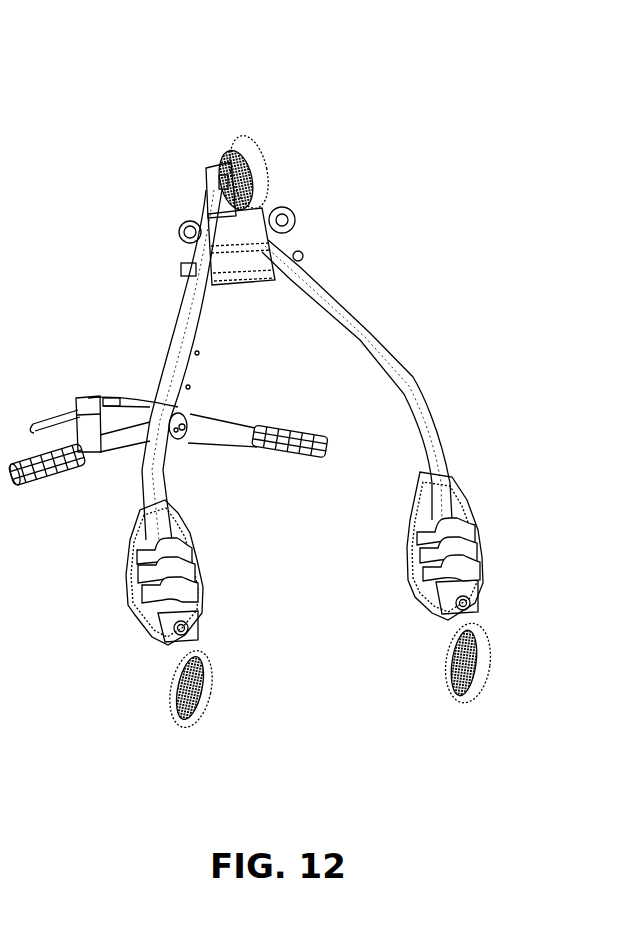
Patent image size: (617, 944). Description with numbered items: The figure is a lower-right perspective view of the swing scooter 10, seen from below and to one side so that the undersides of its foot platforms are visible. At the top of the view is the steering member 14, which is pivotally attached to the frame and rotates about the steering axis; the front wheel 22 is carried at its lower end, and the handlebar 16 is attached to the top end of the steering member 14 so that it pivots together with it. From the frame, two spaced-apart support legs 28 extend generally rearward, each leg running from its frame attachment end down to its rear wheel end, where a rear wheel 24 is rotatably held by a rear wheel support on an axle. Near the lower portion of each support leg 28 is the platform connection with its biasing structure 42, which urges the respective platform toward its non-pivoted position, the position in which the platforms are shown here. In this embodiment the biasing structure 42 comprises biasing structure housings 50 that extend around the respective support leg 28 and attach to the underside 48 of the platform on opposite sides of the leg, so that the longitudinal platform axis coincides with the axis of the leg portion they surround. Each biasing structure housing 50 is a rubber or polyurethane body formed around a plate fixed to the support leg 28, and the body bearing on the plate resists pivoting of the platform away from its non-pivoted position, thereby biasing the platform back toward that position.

The swing scooter 10 is at (304, 148).
The steering member 14 is at (205, 337).
The handlebar 16 is at (282, 433).
The wheel 22 is at (254, 158).
The rear wheel 24 is at (208, 708).
The support leg 28 is at (172, 353).
The biasing structure 42 is at (137, 555).
The underside 48 is at (197, 572).
The biasing structure housing 50 is at (183, 550).